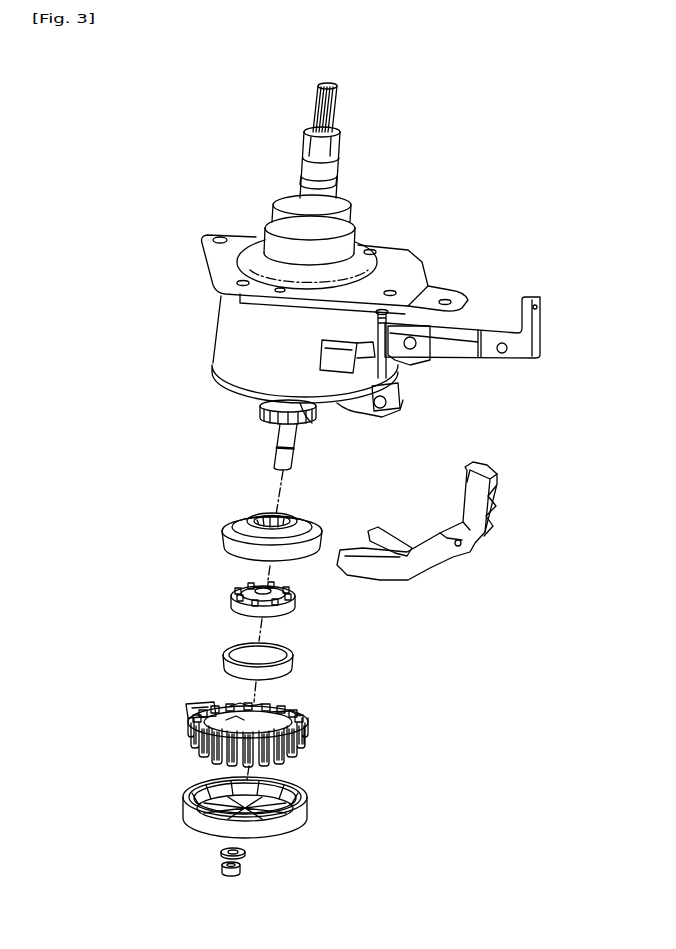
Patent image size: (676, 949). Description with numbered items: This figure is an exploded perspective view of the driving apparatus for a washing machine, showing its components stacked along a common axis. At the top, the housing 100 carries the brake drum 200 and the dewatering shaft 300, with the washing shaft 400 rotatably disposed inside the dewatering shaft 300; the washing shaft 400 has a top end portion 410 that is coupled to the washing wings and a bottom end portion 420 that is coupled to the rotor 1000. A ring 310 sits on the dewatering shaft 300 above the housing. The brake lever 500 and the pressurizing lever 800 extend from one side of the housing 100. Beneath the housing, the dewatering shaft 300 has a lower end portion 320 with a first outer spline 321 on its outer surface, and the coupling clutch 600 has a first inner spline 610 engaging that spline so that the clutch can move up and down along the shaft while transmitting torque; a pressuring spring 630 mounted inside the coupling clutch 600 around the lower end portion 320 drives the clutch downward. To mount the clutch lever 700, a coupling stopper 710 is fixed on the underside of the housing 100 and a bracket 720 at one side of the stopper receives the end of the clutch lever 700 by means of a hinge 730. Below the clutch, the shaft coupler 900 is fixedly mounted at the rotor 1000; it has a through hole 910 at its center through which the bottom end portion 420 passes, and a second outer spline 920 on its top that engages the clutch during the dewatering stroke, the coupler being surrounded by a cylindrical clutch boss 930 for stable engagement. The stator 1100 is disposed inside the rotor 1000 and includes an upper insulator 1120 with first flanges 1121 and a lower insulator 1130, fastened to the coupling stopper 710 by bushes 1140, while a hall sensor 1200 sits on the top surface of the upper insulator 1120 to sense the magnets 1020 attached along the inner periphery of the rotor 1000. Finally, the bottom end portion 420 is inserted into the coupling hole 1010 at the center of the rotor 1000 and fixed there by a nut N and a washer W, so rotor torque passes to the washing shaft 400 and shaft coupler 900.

The housing 100 is at (228, 325).
The brake drum 200 is at (330, 357).
The dewatering shaft 300 is at (350, 158).
The sleeve ring 310 is at (333, 178).
The lower end portion 320 is at (268, 432).
The first outer spline 321 is at (298, 425).
The washing shaft 400 is at (304, 100).
The top end portion 410 is at (338, 130).
The bottom end portion 420 is at (292, 462).
The brake lever 500 is at (518, 358).
The coupling clutch 600 is at (226, 535).
The first inner spline 610 is at (258, 514).
The pressuring spring 630 is at (262, 410).
The clutch lever 700 is at (430, 562).
The coupling stopper 710 is at (212, 373).
The bracket 720 is at (350, 403).
The hinge 730 is at (388, 407).
The pressurizing lever 800 is at (415, 352).
The shaft coupler 900 is at (300, 609).
The through hole 910 is at (270, 587).
The second outer spline 920 is at (240, 589).
The clutch boss 930 is at (294, 661).
The rotor 1000 is at (180, 826).
The coupling hole 1010 is at (280, 815).
The magnets 1020 is at (205, 789).
The stator 1100 is at (188, 743).
The upper insulator 1120 is at (306, 750).
The first flanges 1121 is at (302, 720).
The lower insulator 1130 is at (296, 760).
The bushes 1140 is at (266, 708).
The hall sensor 1200 is at (182, 703).
The washer W is at (247, 853).
The nut N is at (243, 870).